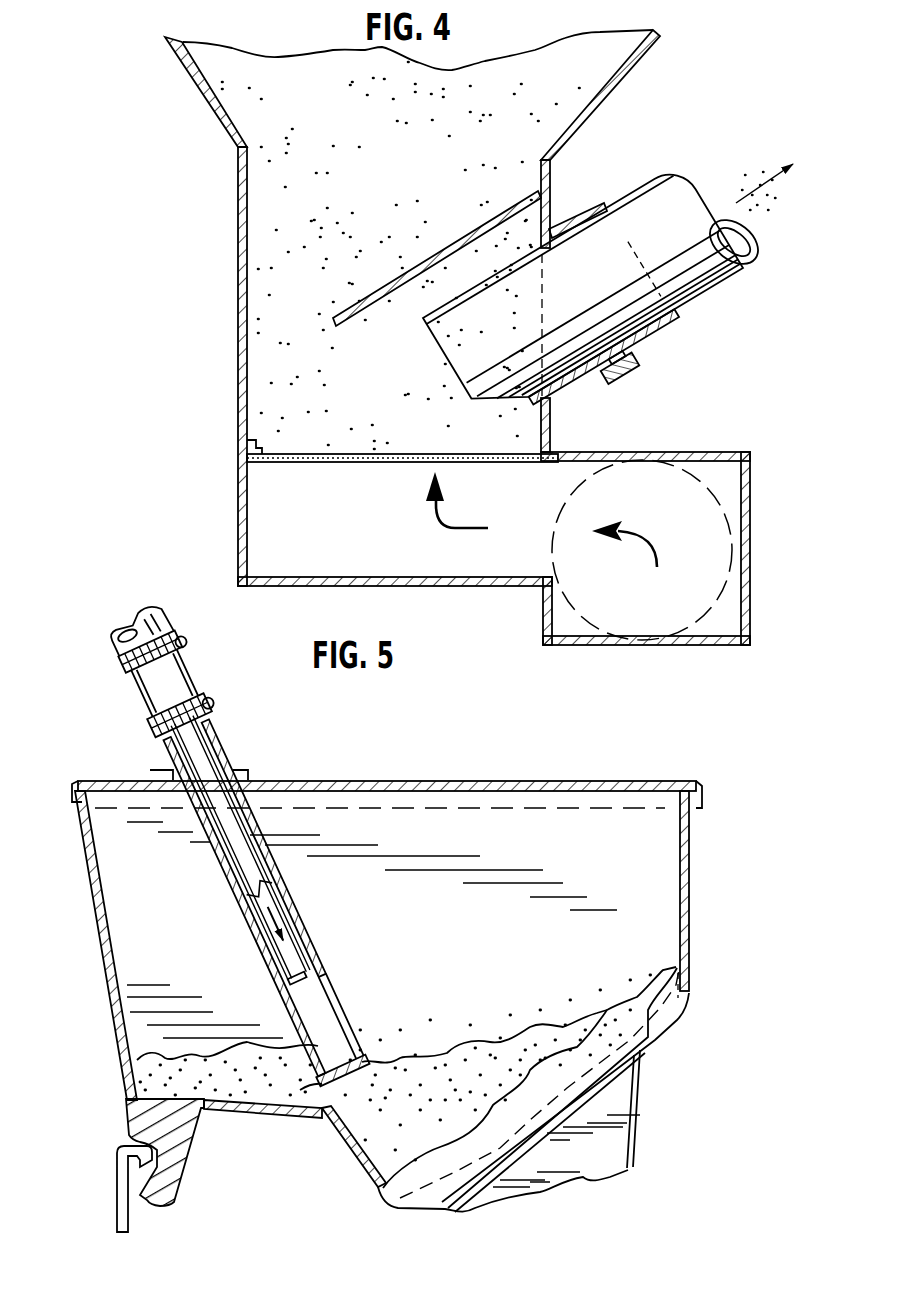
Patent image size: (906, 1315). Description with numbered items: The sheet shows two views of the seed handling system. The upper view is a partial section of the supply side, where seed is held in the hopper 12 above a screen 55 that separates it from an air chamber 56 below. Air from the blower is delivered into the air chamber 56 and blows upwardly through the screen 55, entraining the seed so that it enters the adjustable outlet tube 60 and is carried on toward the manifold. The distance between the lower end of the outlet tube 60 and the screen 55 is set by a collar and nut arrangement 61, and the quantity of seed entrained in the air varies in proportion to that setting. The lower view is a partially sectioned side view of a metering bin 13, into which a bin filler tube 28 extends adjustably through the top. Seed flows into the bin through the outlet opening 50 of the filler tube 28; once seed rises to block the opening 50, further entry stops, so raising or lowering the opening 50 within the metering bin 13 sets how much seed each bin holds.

In FIG. 4, the hopper 12 is at (237, 222).
In FIG. 4, the screen 55 is at (298, 455).
In FIG. 4, the air chamber 56 is at (382, 539).
In FIG. 4, the adjustable outlet tube 60 is at (666, 194).
In FIG. 4, the collar and nut arrangement 61 is at (572, 208).
In FIG. 5, the metering bin 13 is at (112, 1010).
In FIG. 5, the bin filler tube 28 is at (262, 848).
In FIG. 5, the outlet opening 50 is at (340, 1018).